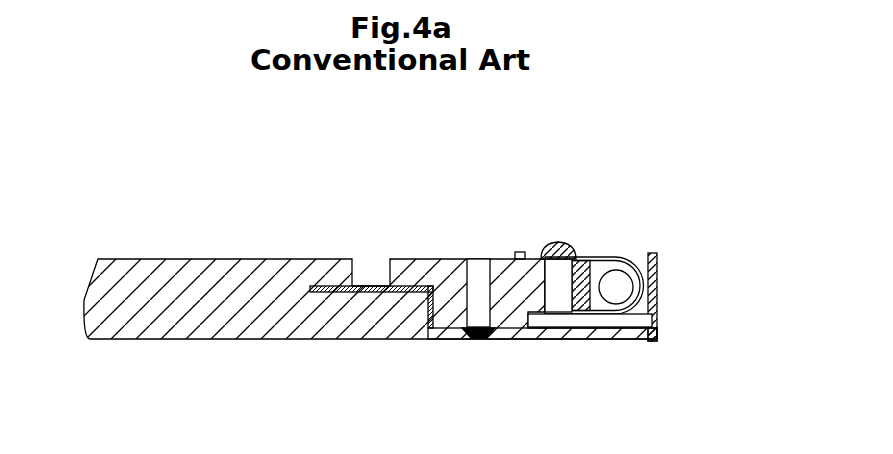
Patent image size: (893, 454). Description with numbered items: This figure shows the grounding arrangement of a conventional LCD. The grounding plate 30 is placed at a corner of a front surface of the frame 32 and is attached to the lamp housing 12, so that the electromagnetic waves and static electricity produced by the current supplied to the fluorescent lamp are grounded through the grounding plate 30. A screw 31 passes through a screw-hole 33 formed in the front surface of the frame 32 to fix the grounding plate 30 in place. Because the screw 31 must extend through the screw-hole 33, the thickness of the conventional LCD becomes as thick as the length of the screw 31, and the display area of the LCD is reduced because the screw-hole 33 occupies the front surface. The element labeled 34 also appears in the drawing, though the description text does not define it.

The lamp housing 12 is at (607, 327).
The grounding plate 30 is at (326, 291).
The screw 31 is at (566, 244).
The frame 32 is at (648, 308).
The screw-hole 33 is at (460, 260).
The housing bottom end 34 is at (656, 318).